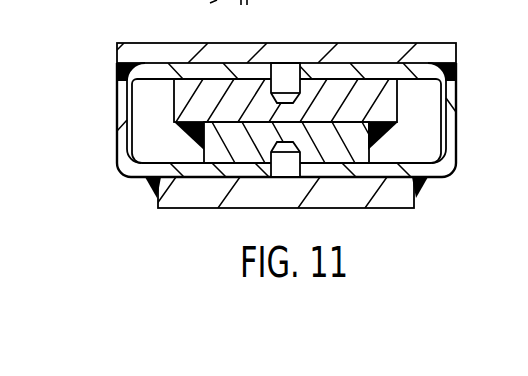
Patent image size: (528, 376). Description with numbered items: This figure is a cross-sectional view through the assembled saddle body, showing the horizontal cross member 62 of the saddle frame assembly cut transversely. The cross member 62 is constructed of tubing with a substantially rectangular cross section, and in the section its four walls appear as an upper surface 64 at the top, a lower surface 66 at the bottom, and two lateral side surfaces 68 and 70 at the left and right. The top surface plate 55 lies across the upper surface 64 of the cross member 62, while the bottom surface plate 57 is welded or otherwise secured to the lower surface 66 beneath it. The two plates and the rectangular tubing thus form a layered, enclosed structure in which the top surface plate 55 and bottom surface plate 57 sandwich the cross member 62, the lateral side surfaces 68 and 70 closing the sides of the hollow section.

The top surface plate 55 is at (313, 47).
The bottom surface plate 57 is at (200, 200).
The horizontal cross member 62 is at (114, 164).
The upper surface 64 is at (208, 43).
The lower surface 66 is at (377, 180).
The lateral side surface 68 is at (116, 115).
The lateral side surface 70 is at (457, 128).